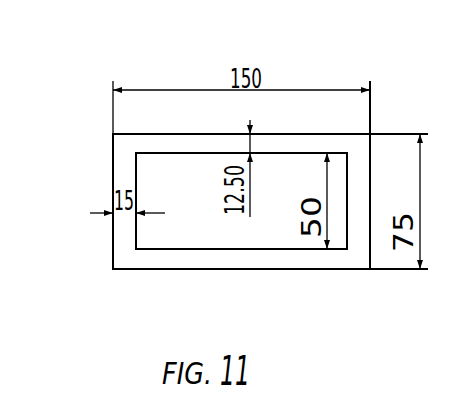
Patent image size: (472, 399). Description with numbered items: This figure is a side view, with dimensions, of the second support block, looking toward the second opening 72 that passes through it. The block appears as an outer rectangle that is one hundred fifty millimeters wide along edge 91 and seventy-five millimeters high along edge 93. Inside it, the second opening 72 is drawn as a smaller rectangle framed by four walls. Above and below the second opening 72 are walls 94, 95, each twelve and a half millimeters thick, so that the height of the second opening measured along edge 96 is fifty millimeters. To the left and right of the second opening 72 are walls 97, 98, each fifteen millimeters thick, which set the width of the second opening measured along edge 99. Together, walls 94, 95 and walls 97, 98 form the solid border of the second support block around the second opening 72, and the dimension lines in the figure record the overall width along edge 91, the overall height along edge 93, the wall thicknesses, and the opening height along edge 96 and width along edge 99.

The second opening 72 is at (180, 224).
The edge 91 is at (320, 269).
The edge 93 is at (368, 154).
The wall 94 is at (200, 142).
The wall 95 is at (203, 259).
The edge 96 is at (348, 193).
The wall 97 is at (122, 217).
The wall 98 is at (348, 232).
The edge 99 is at (216, 249).